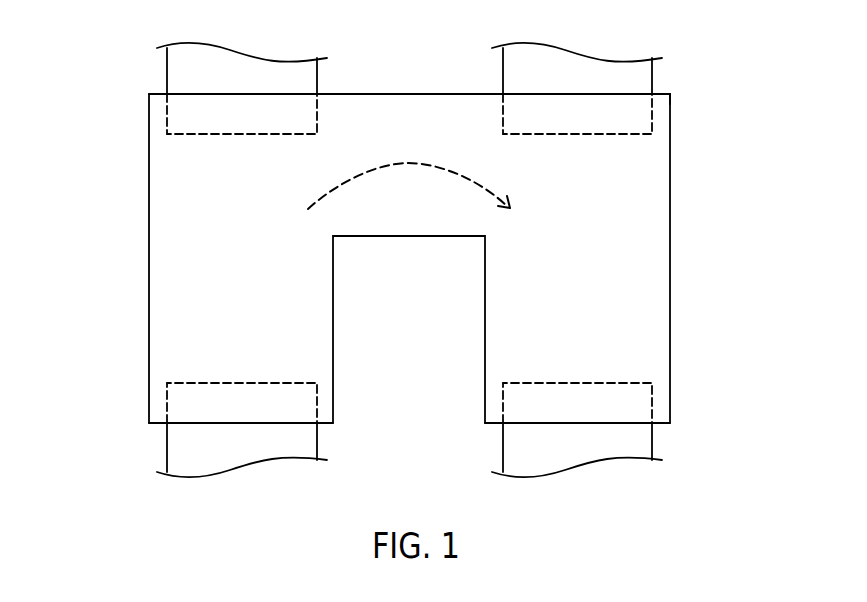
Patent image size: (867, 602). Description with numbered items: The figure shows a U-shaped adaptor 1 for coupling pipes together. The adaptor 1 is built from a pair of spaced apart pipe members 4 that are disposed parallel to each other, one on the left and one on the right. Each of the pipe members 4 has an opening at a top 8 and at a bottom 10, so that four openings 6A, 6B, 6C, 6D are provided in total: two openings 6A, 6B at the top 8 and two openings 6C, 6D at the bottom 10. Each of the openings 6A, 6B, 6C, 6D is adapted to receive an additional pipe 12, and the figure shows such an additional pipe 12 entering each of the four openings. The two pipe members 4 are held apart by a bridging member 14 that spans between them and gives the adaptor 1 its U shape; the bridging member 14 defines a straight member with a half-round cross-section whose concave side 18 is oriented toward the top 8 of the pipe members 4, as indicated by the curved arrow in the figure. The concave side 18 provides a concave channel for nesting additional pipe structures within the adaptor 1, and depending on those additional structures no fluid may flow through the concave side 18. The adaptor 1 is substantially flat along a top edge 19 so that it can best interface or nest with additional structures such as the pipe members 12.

The U-shaped adaptor 1 is at (416, 261).
The pipe members 4 is at (177, 258).
The opening 6A is at (273, 93).
The opening 6B is at (608, 93).
The opening 6C is at (273, 425).
The opening 6D is at (608, 425).
The top 8 is at (398, 86).
The bottom 10 is at (677, 450).
The additional pipe 12 is at (225, 50).
The bridging member 14 is at (388, 237).
The concave side 18 is at (408, 163).
The top edge 19 is at (662, 93).